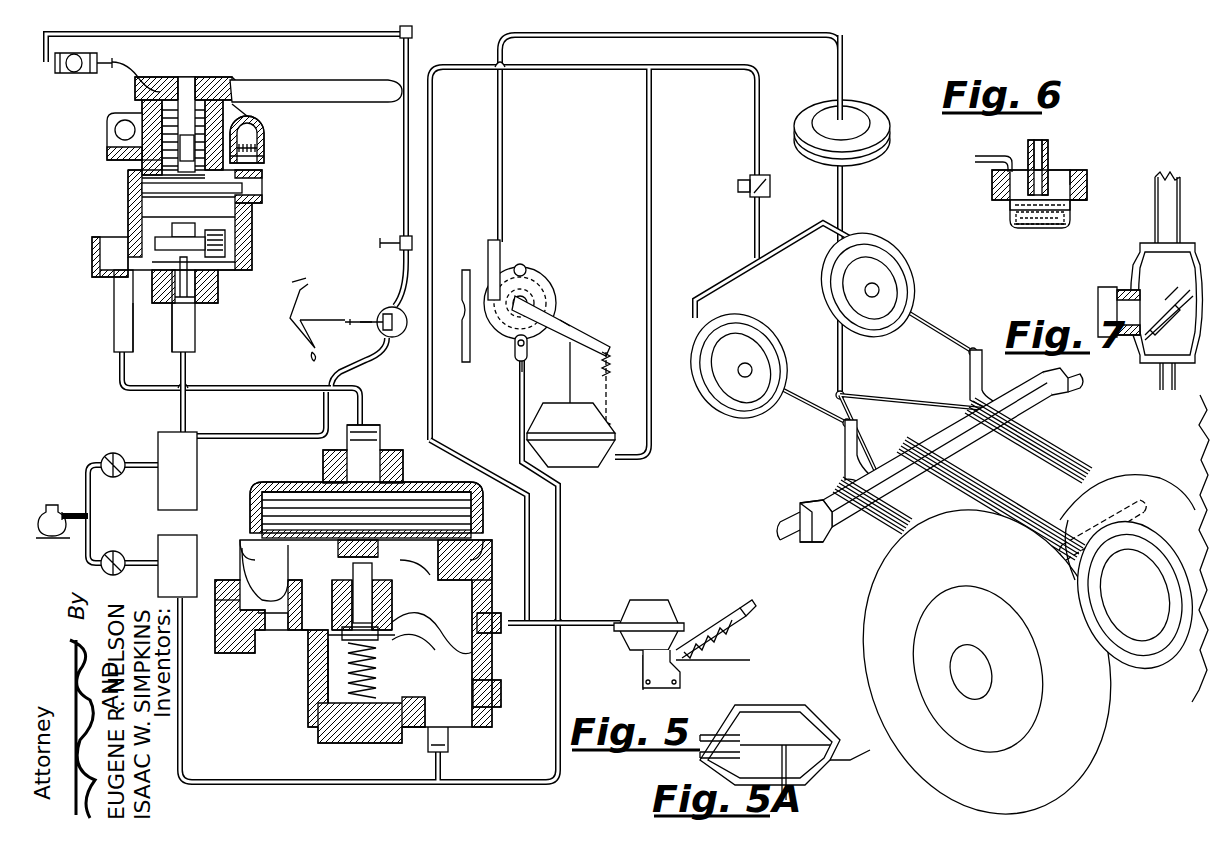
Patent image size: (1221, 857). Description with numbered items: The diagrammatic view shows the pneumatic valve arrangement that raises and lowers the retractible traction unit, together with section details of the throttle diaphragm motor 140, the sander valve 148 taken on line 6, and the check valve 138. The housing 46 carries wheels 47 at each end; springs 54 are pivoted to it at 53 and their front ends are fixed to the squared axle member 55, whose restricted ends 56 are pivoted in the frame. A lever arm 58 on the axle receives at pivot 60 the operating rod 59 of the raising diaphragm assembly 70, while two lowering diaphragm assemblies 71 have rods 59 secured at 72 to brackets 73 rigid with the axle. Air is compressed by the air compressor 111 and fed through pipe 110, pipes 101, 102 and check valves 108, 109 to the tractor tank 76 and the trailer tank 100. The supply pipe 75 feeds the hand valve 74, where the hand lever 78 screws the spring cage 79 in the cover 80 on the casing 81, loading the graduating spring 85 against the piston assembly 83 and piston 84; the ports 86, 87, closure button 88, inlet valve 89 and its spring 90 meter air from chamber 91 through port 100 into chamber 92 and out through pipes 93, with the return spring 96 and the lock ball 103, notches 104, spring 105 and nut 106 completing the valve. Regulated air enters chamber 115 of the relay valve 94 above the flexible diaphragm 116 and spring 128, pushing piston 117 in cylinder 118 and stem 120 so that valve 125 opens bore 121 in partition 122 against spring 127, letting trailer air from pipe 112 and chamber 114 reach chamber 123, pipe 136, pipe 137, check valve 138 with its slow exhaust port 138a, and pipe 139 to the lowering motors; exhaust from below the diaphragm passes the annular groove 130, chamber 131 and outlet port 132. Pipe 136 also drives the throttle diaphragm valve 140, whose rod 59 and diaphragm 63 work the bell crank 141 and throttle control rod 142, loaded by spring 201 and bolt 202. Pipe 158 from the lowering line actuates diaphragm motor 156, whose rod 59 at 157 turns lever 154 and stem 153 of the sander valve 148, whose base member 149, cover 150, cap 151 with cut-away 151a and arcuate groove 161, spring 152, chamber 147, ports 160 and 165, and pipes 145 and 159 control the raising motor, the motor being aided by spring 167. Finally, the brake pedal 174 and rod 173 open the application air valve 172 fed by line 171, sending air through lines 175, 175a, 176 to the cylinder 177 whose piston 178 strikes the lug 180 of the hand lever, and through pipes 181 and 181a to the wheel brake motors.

In FIG. 5, the section line 6— 6 is at (516, 236).
In FIG. 5, the housing 46 is at (1135, 595).
In FIG. 5, the wheels 47 is at (1185, 700).
In FIG. 5A, the wheels 47 is at (858, 748).
In FIG. 5, the pivot 53 is at (1160, 482).
In FIG. 5, the springs 54 is at (926, 508).
In FIG. 5, the squared axle member 55 is at (818, 512).
In FIG. 5, the restricted ends 56 is at (1058, 380).
In FIG. 5, the lever arm 58 is at (895, 408).
In FIG. 5, the operating rod 59 is at (568, 394).
In FIG. 5A, the operating rod 59 is at (788, 794).
In FIG. 5, the pivot 60 is at (836, 393).
In FIG. 5A, the flexible diaphragm member 63 is at (818, 748).
In FIG. 5, the diaphragm assembly 70 is at (854, 116).
In FIG. 5, the diaphragm assemblies 71 is at (748, 318).
In FIG. 5, the rod connection 72 is at (840, 427).
In FIG. 5, the brackets 73 is at (842, 462).
In FIG. 5, the hand valve 74 is at (253, 223).
In FIG. 5, the supply pipe 75 is at (196, 338).
In FIG. 5, the compressed air supply tank 76 is at (177, 471).
In FIG. 5, the hand lever 78 is at (344, 86).
In FIG. 5, the spring cage 79 is at (207, 78).
In FIG. 5, the cover 80 is at (106, 140).
In FIG. 5, the casing 81 is at (140, 164).
In FIG. 5, the piston assembly 83 is at (186, 151).
In FIG. 5, the piston 84 is at (128, 200).
In FIG. 5, the graduating spring 85 is at (162, 112).
In FIG. 5, the vertically disposed port 86 is at (142, 180).
In FIG. 5, the transversely disposed port 87 is at (192, 188).
In FIG. 5, the closure button 88 is at (183, 232).
In FIG. 5, the inlet valve 89 is at (222, 258).
In FIG. 5, the inlet valve spring 90 is at (218, 300).
In FIG. 5, the chamber 91 is at (152, 327).
In FIG. 5, the chamber 92 is at (100, 250).
In FIG. 5, the pipes 93 is at (114, 318).
In FIG. 5, the relay valve 94 is at (272, 474).
In FIG. 5, the return spring 96 is at (142, 222).
In FIG. 5, the pressure tank 100 is at (226, 243).
In FIG. 5, the pipe 101 is at (90, 462).
In FIG. 5, the pipe 102 is at (88, 560).
In FIG. 5, the lock ball 103 is at (262, 125).
In FIG. 5, the notches 104 is at (238, 104).
In FIG. 5, the compression spring 105 is at (266, 158).
In FIG. 5, the nut 106 is at (264, 148).
In FIG. 5, the check valve 108 is at (108, 454).
In FIG. 5, the check valve 109 is at (113, 551).
In FIG. 5, the pipe 110 is at (80, 514).
In FIG. 5, the air compressor 111 is at (52, 505).
In FIG. 5, the pipe 112 is at (448, 745).
In FIG. 5, the chamber 114 is at (500, 680).
In FIG. 5, the chamber 115 is at (472, 508).
In FIG. 5, the flexible diaphragm 116 is at (472, 534).
In FIG. 5, the piston 117 is at (392, 592).
In FIG. 5, the cylinder 118 is at (475, 570).
In FIG. 5, the stem 120 is at (378, 672).
In FIG. 5, the bore 121 is at (396, 612).
In FIG. 5, the partition 122 is at (428, 636).
In FIG. 5, the chamber 123 is at (484, 608).
In FIG. 5, the valve 125 is at (378, 648).
In FIG. 5, the compression spring 127 is at (332, 676).
In FIG. 5, the compression spring 128 is at (404, 472).
In FIG. 5, the annular groove 130 is at (250, 560).
In FIG. 5, the chamber 131 is at (215, 614).
In FIG. 5, the outlet port 132 is at (270, 640).
In FIG. 5, the pipe 136 is at (530, 628).
In FIG. 5A, the pipe 136 is at (735, 734).
In FIG. 5, the pipe 137 is at (450, 447).
In FIG. 5, the check valve 138 is at (748, 184).
In FIG. 7, the check valve 138 is at (1136, 270).
In FIG. 7, the small port 138a is at (1152, 281).
In FIG. 5, the pipe 139 is at (757, 246).
In FIG. 7, the pipe 139 is at (1177, 178).
In FIG. 5, the diaphragm valve 140 is at (664, 630).
In FIG. 5A, the diaphragm valve 140 is at (798, 716).
In FIG. 5, the bell crank 141 is at (682, 680).
In FIG. 5, the throttle control rod 142 is at (718, 660).
In FIG. 5, the pipe 145 is at (558, 712).
In FIG. 6, the pipe 145 is at (986, 156).
In FIG. 5, the chamber 147 is at (526, 365).
In FIG. 6, the chamber 147 is at (1012, 216).
In FIG. 5, the sander valve 148 is at (566, 300).
In FIG. 6, the sander valve 148 is at (992, 186).
In FIG. 6, the base member 149 is at (1088, 188).
In FIG. 6, the cover 150 is at (1014, 228).
In FIG. 5, the cap 151 is at (556, 290).
In FIG. 6, the cap 151 is at (1072, 206).
In FIG. 5, the cut-away portion 151a is at (512, 360).
In FIG. 6, the compression spring 152 is at (1066, 228).
In FIG. 5, the stem 153 is at (488, 330).
In FIG. 6, the stem 153 is at (1030, 155).
In FIG. 5, the lever 154 is at (590, 338).
In FIG. 6, the lever 154 is at (1046, 140).
In FIG. 5, the diaphragm motor 156 is at (590, 467).
In FIG. 5, the rod connection 157 is at (572, 322).
In FIG. 5, the pipe 158 is at (654, 238).
In FIG. 5, the pipe 159 is at (604, 40).
In FIG. 5, the port 160 is at (470, 310).
In FIG. 5, the arcuate groove 161 is at (544, 276).
In FIG. 6, the arcuate groove 161 is at (1068, 174).
In FIG. 5, the port 165 is at (526, 268).
In FIG. 6, the port 165 is at (1058, 170).
In FIG. 5, the additional spring 167 is at (606, 372).
In FIG. 5, the air line 171 is at (305, 436).
In FIG. 5, the application air valve 172 is at (390, 306).
In FIG. 5, the operating rod 173 is at (350, 320).
In FIG. 5, the brake pedal 174 is at (300, 320).
In FIG. 5, the line 175 is at (403, 187).
In FIG. 5, the line 175a is at (412, 30).
In FIG. 5, the line 176 is at (268, 36).
In FIG. 5, the cylinder 177 is at (68, 78).
In FIG. 5, the piston 178 is at (100, 62).
In FIG. 5, the lug 180 is at (130, 70).
In FIG. 5, the pipe 181 is at (384, 240).
In FIG. 5, the pipe 181a is at (392, 360).
In FIG. 5, the spring 201 is at (718, 612).
In FIG. 5, the bolt 202 is at (756, 612).